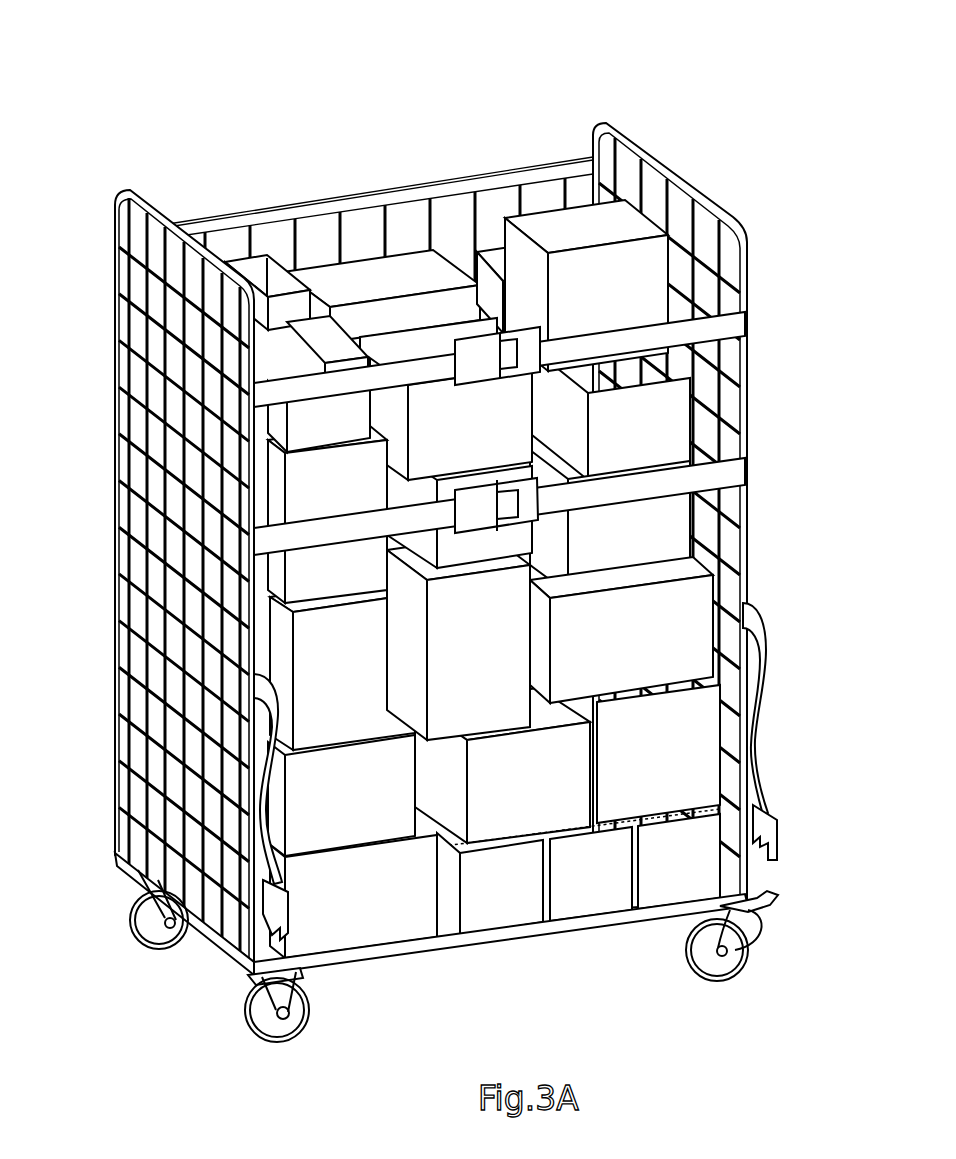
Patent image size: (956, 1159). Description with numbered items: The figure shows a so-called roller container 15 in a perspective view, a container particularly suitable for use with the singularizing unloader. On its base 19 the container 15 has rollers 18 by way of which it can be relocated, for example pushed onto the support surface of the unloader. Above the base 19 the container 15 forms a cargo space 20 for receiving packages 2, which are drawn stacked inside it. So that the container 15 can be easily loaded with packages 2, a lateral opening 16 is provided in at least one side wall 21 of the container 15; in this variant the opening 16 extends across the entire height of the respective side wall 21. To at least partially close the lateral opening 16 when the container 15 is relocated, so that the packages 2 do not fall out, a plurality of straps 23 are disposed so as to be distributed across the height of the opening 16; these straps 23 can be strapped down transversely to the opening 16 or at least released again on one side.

The container 15 is at (438, 559).
The packages 2 is at (557, 222).
The lateral opening 16 is at (314, 654).
The rollers 18 is at (162, 938).
The base 19 is at (573, 927).
The cargo space 20 is at (381, 275).
The side wall 21 is at (768, 538).
The straps 23 is at (723, 326).